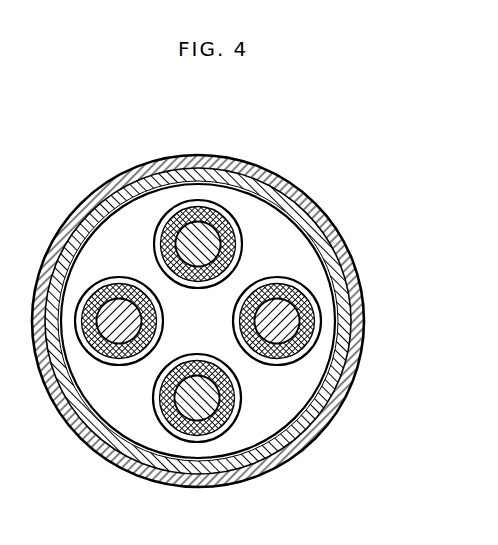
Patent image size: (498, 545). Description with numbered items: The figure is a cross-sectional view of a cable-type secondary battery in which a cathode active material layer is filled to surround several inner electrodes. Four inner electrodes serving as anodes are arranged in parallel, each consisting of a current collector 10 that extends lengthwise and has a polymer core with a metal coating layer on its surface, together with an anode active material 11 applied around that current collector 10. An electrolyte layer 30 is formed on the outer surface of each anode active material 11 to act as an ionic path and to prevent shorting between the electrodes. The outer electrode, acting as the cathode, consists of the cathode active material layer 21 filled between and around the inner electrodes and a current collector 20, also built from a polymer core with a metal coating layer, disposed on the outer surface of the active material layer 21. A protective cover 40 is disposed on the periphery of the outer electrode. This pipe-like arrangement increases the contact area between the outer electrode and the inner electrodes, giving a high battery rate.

The current collector of inner electrode 10 is at (196, 221).
The active material of inner electrode 11 is at (211, 208).
The electrolyte layer 30 is at (223, 202).
The current collector of outer electrode 20 is at (327, 250).
The active material of outer electrode 21 is at (293, 228).
The protective cover 40 is at (352, 270).